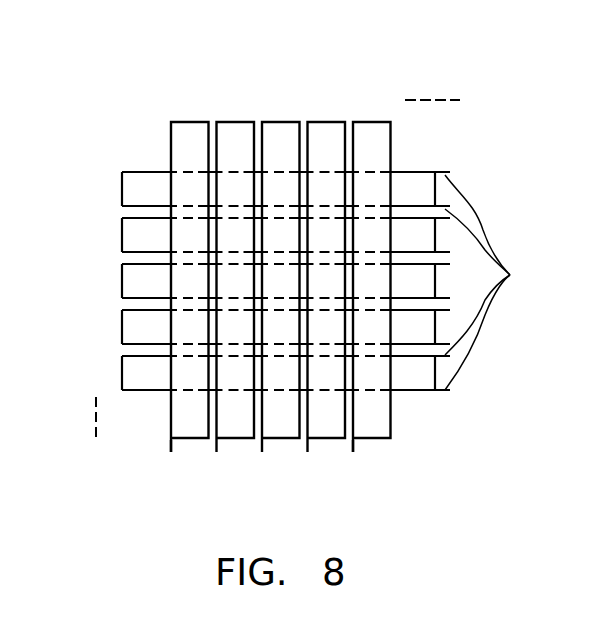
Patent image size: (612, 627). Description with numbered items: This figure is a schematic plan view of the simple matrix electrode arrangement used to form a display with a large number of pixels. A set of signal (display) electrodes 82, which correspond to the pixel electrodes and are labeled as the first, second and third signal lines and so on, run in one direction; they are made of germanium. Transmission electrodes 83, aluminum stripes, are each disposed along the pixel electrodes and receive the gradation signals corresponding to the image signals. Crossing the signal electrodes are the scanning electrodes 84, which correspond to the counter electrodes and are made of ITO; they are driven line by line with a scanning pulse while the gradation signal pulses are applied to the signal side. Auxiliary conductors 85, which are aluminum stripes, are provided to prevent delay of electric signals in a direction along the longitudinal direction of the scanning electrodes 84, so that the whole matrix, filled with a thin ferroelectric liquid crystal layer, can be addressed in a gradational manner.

The signal (display) electrodes 82 is at (478, 75).
The transmission electrodes 83 is at (355, 448).
The scanning electrodes 84 is at (78, 165).
The auxiliary conductors 85 is at (510, 275).